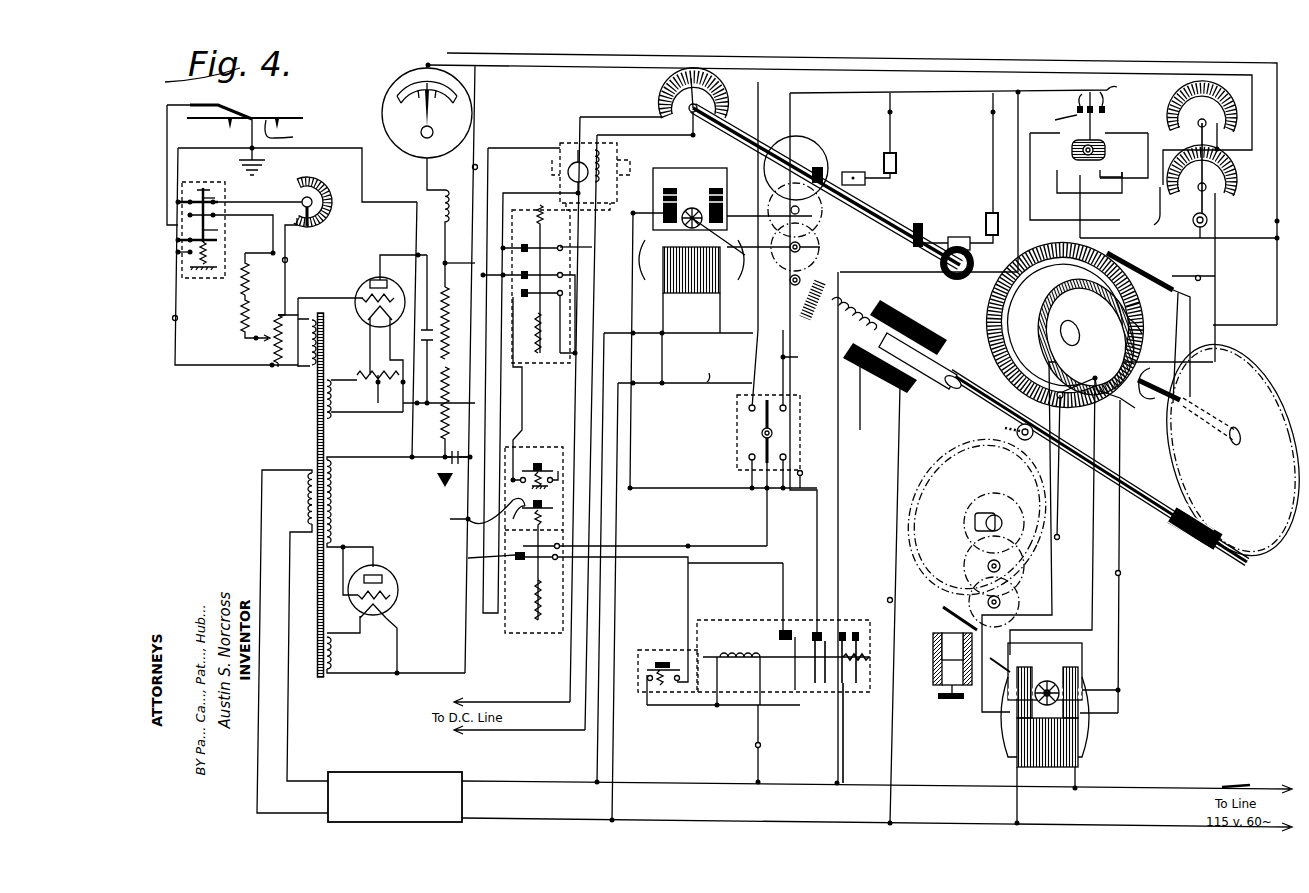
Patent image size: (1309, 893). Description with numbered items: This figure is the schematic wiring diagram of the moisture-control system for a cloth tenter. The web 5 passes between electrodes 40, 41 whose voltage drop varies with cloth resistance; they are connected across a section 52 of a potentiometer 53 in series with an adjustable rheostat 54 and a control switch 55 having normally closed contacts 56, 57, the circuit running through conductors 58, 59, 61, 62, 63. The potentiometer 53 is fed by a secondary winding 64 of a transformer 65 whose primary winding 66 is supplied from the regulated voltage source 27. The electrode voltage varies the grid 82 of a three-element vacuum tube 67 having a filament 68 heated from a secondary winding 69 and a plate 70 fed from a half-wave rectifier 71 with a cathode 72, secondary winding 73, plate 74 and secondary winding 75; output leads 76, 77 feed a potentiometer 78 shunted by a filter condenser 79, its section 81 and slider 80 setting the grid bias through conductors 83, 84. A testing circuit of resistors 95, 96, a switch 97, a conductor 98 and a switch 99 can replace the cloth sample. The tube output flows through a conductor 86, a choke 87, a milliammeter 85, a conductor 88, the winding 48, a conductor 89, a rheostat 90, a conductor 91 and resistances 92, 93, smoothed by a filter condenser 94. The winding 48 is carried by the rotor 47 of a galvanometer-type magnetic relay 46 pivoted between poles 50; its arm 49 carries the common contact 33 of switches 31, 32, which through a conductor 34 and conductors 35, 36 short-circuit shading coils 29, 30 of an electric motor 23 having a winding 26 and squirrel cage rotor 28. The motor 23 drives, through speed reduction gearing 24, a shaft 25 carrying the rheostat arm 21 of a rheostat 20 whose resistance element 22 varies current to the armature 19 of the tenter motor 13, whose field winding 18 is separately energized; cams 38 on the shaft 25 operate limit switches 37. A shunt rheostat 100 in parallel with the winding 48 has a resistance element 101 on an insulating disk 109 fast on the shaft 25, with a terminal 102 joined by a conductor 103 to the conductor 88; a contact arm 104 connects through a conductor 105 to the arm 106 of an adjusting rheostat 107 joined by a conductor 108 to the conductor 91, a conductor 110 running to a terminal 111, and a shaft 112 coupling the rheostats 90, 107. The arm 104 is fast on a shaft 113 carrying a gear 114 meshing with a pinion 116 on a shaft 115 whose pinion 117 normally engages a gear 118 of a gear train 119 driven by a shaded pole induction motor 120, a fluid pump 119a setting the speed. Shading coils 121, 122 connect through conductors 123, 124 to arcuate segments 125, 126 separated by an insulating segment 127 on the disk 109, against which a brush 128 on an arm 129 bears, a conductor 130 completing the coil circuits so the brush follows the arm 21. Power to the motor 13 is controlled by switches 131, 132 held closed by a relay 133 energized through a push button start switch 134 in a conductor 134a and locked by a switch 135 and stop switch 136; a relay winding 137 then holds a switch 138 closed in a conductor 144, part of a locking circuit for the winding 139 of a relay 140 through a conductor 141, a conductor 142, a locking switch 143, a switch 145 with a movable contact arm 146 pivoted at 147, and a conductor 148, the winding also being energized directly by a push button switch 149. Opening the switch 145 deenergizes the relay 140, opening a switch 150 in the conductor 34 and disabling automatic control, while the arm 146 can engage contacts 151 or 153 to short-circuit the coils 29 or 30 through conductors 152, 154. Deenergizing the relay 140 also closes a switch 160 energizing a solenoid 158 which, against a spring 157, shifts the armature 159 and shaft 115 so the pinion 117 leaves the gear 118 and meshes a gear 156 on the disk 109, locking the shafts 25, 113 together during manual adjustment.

The web 5 is at (311, 106).
The tenter motor 13 is at (571, 137).
The field winding 18 is at (596, 185).
The armature 19 is at (558, 175).
The rheostat 20 is at (664, 89).
The rheostat arm 21 is at (683, 108).
The resistance element 22 is at (663, 106).
The electric motor 23 is at (698, 303).
The speed reduction gearing 24 is at (822, 150).
The shaft 25 is at (890, 226).
The winding 26 is at (723, 300).
The regulated voltage source 27 is at (420, 772).
The squirrel cage rotor 28 is at (697, 207).
The shading coils 29 is at (663, 218).
The shading coils 30 is at (726, 196).
The switch 31 is at (1106, 110).
The switch 32 is at (1075, 109).
The common contact 33 is at (1106, 91).
The conductor 34 is at (1025, 236).
The conductor 35 is at (995, 112).
The conductor 36 is at (892, 112).
The switches 37 is at (897, 170).
The cams 38 is at (818, 226).
The electrode 40 is at (252, 116).
The electrode 41 is at (290, 133).
The magnetic relay 46 is at (1118, 138).
The rotor 47 is at (1072, 147).
The winding 48 is at (1072, 155).
The arm 49 is at (1053, 119).
The poles 50 is at (1089, 204).
The section 52 is at (265, 337).
The potentiometer 53 is at (270, 367).
The adjustable rheostat 54 is at (336, 181).
The control switch 55 is at (195, 183).
The normally closed contact 56 is at (220, 200).
The normally closed contact 57 is at (213, 242).
The conductor 58 is at (213, 148).
The conductor 59 is at (274, 202).
The conductor 61 is at (287, 260).
The conductor 62 is at (177, 318).
The conductor 63 is at (191, 106).
The secondary winding 64 is at (303, 372).
The transformer 65 is at (316, 457).
The primary winding 66 is at (306, 501).
The vacuum tube 67 is at (373, 277).
The filament 68 is at (380, 326).
The secondary winding 69 is at (336, 398).
The plate 70 is at (369, 282).
The half-wave rectifier 71 is at (390, 571).
The cathode 72 is at (363, 640).
The secondary winding 73 is at (334, 651).
The plate 74 is at (384, 580).
The secondary winding 75 is at (336, 503).
The output lead 76 is at (365, 448).
The output lead 77 is at (474, 514).
The potentiometer 78 is at (441, 450).
The filter condenser 79 is at (462, 470).
The adjustable slider 80 is at (441, 428).
The section 81 is at (449, 430).
The grid 82 is at (362, 306).
The conductor 83 is at (398, 200).
The conductor 84 is at (325, 296).
The milliammeter 85 is at (385, 117).
The conductor 86 is at (402, 256).
The choke 87 is at (455, 229).
The conductor 88 is at (447, 53).
The conductor 89 is at (1128, 176).
The rheostat 90 is at (1236, 105).
The conductor 91 is at (474, 167).
The resistance 92 is at (445, 284).
The resistance 93 is at (440, 375).
The filter condenser 94 is at (431, 326).
The resistor 95 is at (241, 290).
The resistor 96 is at (241, 327).
The switch 97 is at (213, 250).
The conductor 98 is at (264, 251).
The switch 99 is at (186, 243).
The rheostat 100 is at (1000, 300).
The resistance element 101 is at (1005, 328).
The terminal 102 is at (1133, 332).
The conductor 103 is at (1277, 305).
The contact arm 104 is at (1148, 260).
The conductor 105 is at (1212, 270).
The arm 106 is at (1193, 218).
The adjusting rheostat 107 is at (1240, 189).
The conductor 108 is at (1159, 227).
The insulating disk 109 is at (1072, 318).
The conductor 110 is at (1213, 343).
The terminal 111 is at (995, 402).
The shaft 112 is at (1200, 138).
The shaft 113 is at (1188, 404).
The gear 114 is at (1250, 497).
The shaft 115 is at (1145, 520).
The pinion 116 is at (1185, 548).
The pinion 117 is at (1015, 430).
The gear 118 is at (960, 460).
The gear train 119 is at (1024, 495).
The fluid pump 119a is at (936, 642).
The shaded pole induction motor 120 is at (989, 730).
The shading coils 121 is at (1033, 672).
The shading coils 122 is at (1017, 708).
The conductor 123 is at (1085, 586).
The conductor 124 is at (1059, 537).
The arcuate segment 125 is at (1103, 357).
The arcuate segment 126 is at (1064, 400).
The insulating segment 127 is at (1098, 400).
The brush 128 is at (1104, 398).
The arm 129 is at (1147, 408).
The conductor 130 is at (1120, 573).
The switch 131 is at (547, 284).
The switch 132 is at (529, 313).
The relay 133 is at (537, 373).
The push button start switch 134 is at (546, 470).
The conductor 134a is at (533, 515).
The switch 135 is at (516, 390).
The stop switch 136 is at (480, 523).
The relay winding 137 is at (535, 583).
The switch 138 is at (609, 613).
The winding 139 is at (740, 660).
The relay 140 is at (752, 620).
The conductor 141 is at (760, 745).
The conductor 142 is at (732, 703).
The locking switch 143 is at (784, 612).
The conductor 144 is at (670, 548).
The switch 145 is at (763, 470).
The movable contact arm 146 is at (763, 443).
The pivot 147 is at (762, 432).
The conductor 148 is at (702, 370).
The push button switch 149 is at (670, 687).
The switch 150 is at (817, 698).
The contacts 151 is at (750, 407).
The conductor 152 is at (753, 340).
The contacts 153 is at (750, 457).
The conductor 154 is at (805, 362).
The gear 156 is at (1000, 367).
The spring 157 is at (868, 315).
The solenoid 158 is at (915, 318).
The armature 159 is at (918, 382).
The switch 160 is at (871, 608).